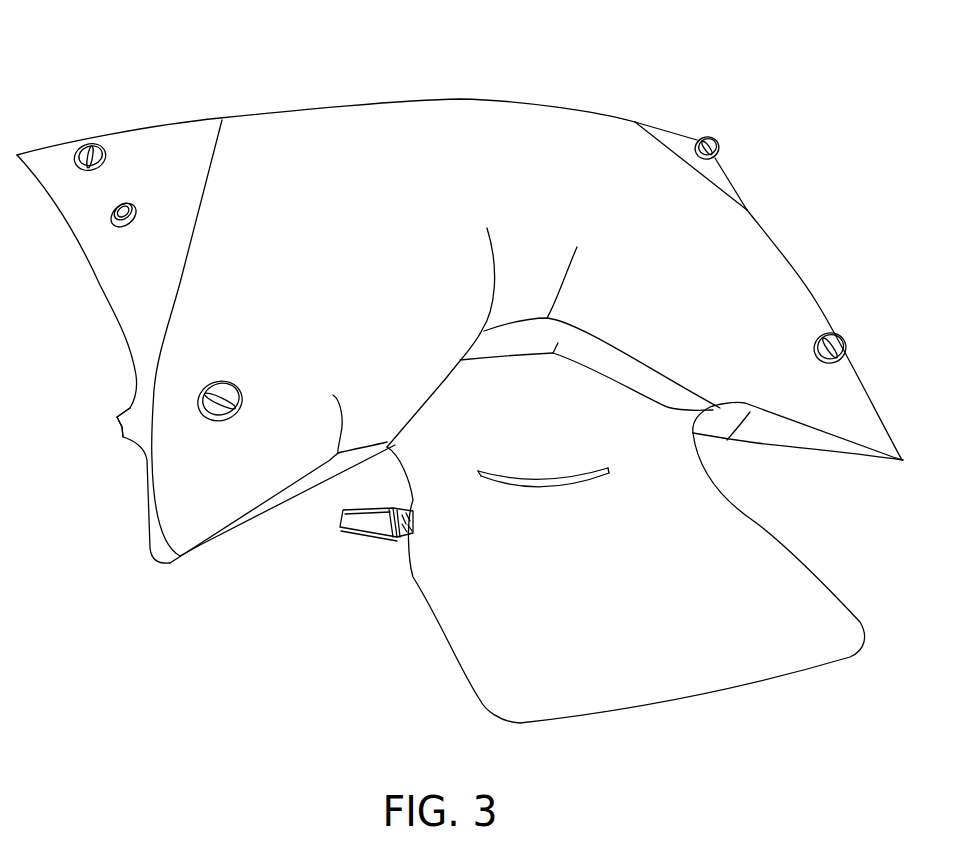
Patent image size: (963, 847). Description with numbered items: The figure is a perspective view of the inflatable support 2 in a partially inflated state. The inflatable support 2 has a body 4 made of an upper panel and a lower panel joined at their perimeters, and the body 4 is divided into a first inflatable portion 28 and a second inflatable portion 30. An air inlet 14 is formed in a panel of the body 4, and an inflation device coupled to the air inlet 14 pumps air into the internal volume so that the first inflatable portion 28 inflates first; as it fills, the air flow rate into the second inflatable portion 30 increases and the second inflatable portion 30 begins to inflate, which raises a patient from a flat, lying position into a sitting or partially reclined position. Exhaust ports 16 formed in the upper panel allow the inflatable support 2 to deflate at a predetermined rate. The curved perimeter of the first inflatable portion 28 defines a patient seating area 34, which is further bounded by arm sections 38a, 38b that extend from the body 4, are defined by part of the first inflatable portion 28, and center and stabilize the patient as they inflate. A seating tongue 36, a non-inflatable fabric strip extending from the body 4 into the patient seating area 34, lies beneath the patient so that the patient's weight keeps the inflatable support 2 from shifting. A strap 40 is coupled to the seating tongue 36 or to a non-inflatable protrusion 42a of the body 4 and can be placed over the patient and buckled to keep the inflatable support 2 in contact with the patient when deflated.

The inflatable support 2 is at (607, 70).
The body 4 is at (180, 140).
The air inlet 14 is at (123, 233).
The exhaust port 16 is at (83, 140).
The first inflatable portion 28 is at (133, 295).
The second inflatable portion 30 is at (433, 125).
The patient seating area 34 is at (540, 384).
The seating tongue 36 is at (710, 663).
The arm section 38a is at (216, 518).
The arm section 38b is at (852, 423).
The strap 40 is at (363, 527).
The protrusion 42a is at (118, 428).